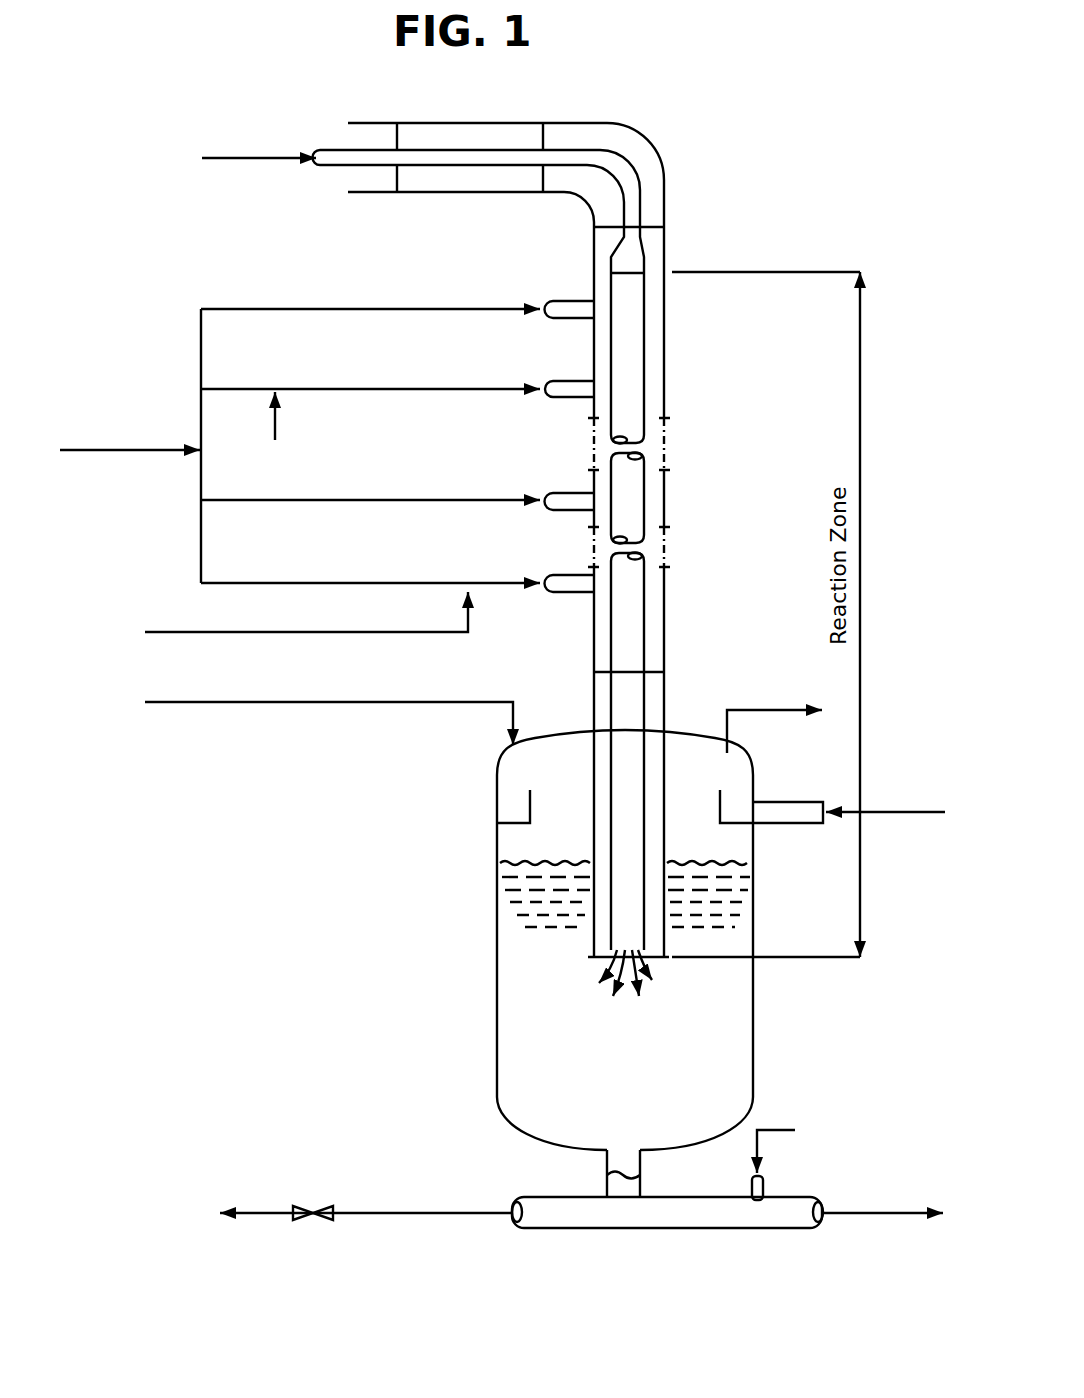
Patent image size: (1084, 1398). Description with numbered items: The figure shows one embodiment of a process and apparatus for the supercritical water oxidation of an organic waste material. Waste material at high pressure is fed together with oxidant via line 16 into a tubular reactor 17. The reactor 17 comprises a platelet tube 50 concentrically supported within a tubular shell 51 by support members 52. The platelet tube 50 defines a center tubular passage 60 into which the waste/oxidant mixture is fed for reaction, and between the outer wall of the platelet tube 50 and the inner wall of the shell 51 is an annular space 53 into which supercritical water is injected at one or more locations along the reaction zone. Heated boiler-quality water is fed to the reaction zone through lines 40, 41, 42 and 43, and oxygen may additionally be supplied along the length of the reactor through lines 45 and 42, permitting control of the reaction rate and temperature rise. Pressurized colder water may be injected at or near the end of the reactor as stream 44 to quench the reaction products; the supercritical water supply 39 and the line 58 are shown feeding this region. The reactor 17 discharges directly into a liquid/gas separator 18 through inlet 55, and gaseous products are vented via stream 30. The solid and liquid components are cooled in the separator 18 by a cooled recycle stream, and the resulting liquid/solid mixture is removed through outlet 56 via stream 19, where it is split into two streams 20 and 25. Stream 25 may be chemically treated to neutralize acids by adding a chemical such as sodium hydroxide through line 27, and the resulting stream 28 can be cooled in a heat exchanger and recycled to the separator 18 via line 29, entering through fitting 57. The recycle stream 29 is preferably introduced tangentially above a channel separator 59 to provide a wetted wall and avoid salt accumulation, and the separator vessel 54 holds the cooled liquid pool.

The line 16 is at (228, 158).
The tubular reactor 17 is at (687, 153).
The liquid/gas separator 18 is at (484, 876).
The stream 19 is at (617, 1187).
The stream 20 is at (410, 1213).
The stream 25 is at (677, 1214).
The line 27 is at (778, 1130).
The stream 28 is at (845, 1220).
The line 29 is at (888, 812).
The stream 30 is at (757, 712).
The supercritical water feed 39 is at (68, 453).
The line 40 is at (358, 583).
The line 41 is at (358, 500).
The line 42 is at (358, 389).
The line 43 is at (358, 309).
The stream 44 is at (285, 634).
The line 45 is at (275, 425).
The platelet tube 50 is at (647, 360).
The tubular shell 51 is at (665, 407).
The support members 52 is at (540, 124).
The annular space 53 is at (611, 253).
The vessel 54 is at (755, 1045).
The inlet 55 is at (670, 727).
The outlet 56 is at (625, 1158).
The recycle fitting 57 is at (765, 826).
The feed line 58 is at (285, 704).
The channel separator 59 is at (528, 800).
The center tubular passage 60 is at (611, 339).